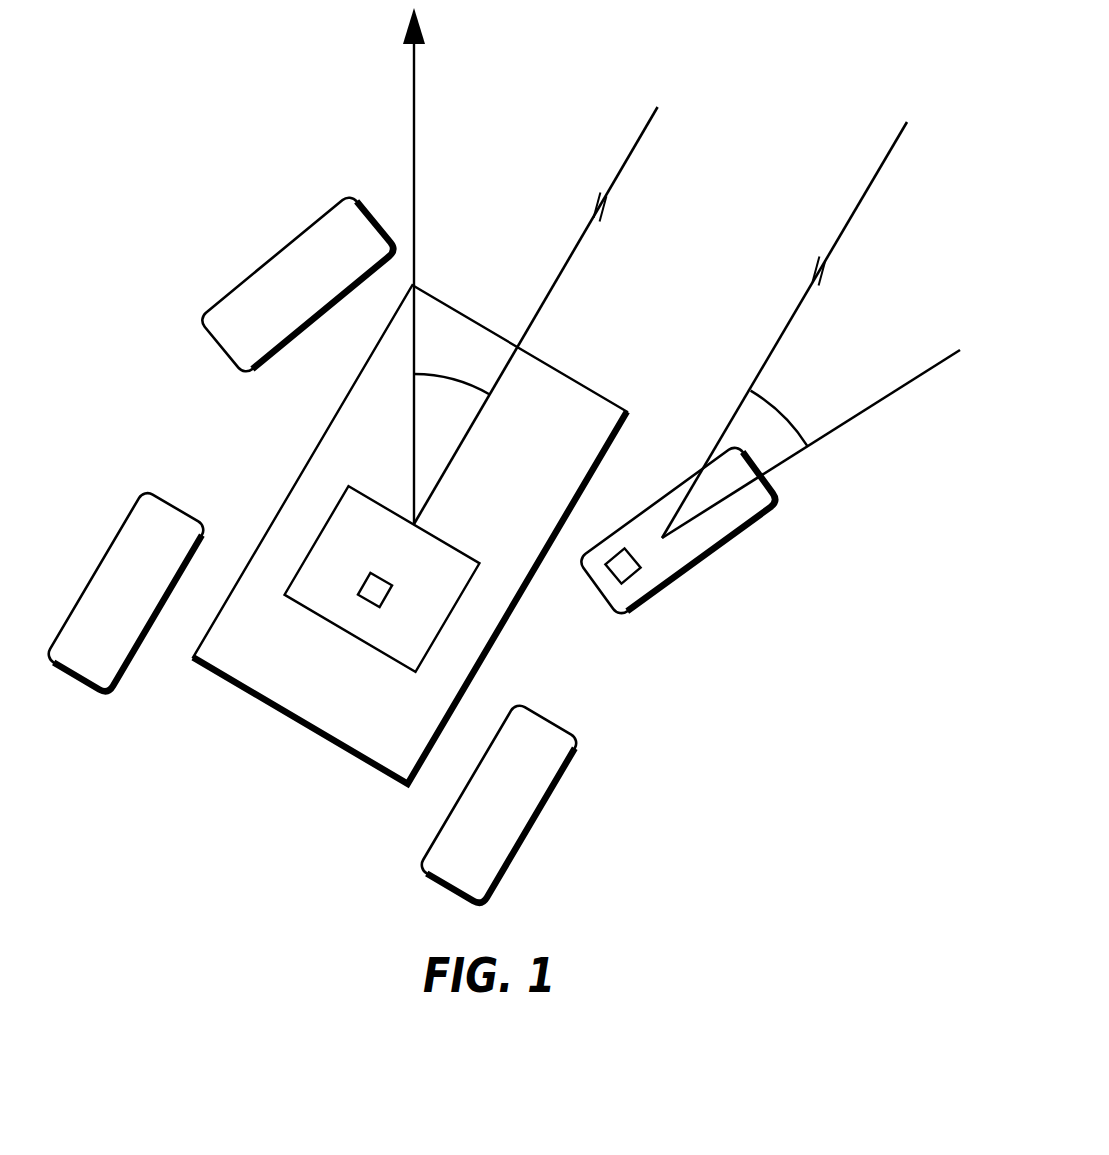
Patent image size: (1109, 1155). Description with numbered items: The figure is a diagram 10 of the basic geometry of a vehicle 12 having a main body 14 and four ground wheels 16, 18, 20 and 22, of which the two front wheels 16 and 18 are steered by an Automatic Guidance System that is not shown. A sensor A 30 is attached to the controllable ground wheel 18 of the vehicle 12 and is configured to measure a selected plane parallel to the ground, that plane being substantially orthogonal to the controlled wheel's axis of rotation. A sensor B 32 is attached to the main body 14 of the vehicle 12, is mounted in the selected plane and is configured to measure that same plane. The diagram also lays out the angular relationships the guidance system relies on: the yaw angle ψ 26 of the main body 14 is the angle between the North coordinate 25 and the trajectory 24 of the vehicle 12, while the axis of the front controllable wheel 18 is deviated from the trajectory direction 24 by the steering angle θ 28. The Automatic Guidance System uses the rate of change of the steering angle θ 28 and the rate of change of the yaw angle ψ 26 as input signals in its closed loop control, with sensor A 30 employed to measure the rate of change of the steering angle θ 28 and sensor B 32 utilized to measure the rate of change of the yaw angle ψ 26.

The diagram 10 is at (218, 842).
The vehicle 12 is at (258, 738).
The main body 14 is at (328, 450).
The front ground wheel 16 is at (310, 248).
The front controllable ground wheel 18 is at (740, 508).
The ground wheel 20 is at (548, 750).
The ground wheel 22 is at (138, 525).
The trajectory 24 is at (643, 142).
The North coordinate 25 is at (416, 62).
The yaw angle ψ 26 is at (451, 340).
The steering angle θ 28 is at (798, 380).
The sensor A 30 is at (637, 560).
The sensor B 32 is at (383, 580).